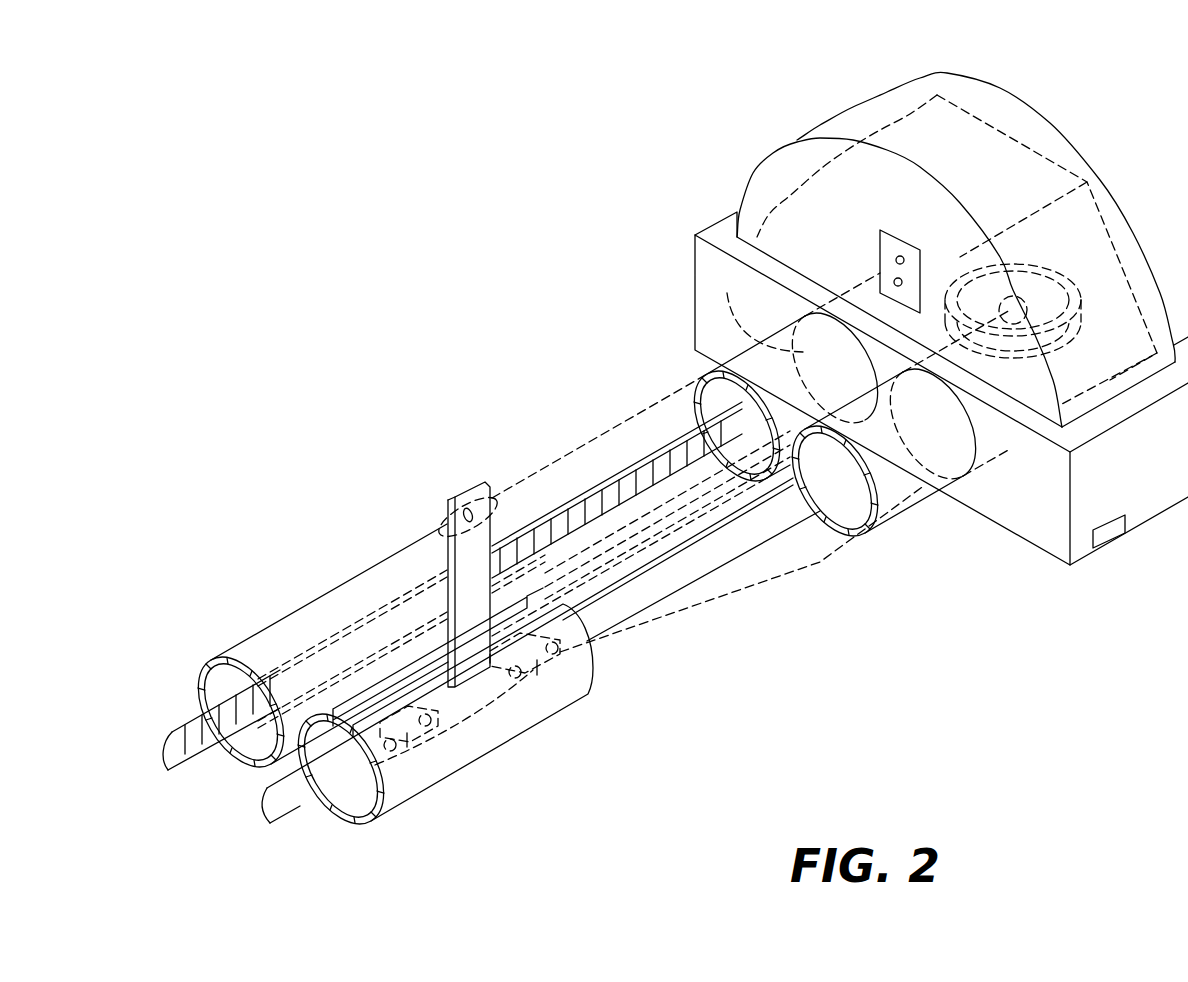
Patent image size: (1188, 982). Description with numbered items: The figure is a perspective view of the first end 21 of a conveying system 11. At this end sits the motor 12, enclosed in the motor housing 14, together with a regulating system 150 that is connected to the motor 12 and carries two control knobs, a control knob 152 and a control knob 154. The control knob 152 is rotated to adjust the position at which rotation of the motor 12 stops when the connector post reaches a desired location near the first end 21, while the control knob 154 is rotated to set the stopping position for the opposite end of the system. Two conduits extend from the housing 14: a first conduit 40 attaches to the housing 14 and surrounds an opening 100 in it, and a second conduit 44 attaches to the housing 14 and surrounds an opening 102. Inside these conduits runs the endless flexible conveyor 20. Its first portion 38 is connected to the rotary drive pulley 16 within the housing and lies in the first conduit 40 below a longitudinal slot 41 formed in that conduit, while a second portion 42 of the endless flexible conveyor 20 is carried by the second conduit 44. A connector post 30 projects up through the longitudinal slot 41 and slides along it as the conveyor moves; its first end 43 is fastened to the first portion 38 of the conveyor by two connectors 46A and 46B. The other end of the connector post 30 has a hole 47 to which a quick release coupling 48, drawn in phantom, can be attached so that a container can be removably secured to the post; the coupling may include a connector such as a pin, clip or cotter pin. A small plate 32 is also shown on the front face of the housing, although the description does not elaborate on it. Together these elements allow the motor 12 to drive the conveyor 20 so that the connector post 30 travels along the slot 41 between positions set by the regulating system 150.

The conveying system 11 is at (400, 112).
The motor 12 is at (1020, 165).
The motor housing 14 is at (850, 127).
The rotary drive pulley 16 is at (1048, 300).
The endless flexible conveyor 20 is at (660, 590).
The first end 21 is at (760, 105).
The connector post 30 is at (467, 552).
The switch plate 32 is at (1108, 535).
The first portion of the endless flexible conveyor 38 is at (762, 530).
The first conduit 40 is at (896, 500).
The longitudinal slot 41 is at (363, 710).
The second portion of the endless flexible conveyor 42 is at (577, 517).
The first end of the connector post 43 is at (488, 697).
The second conduit 44 is at (712, 398).
The connector 46A is at (408, 747).
The connector 46B is at (535, 670).
The hole 47 is at (472, 510).
The quick release coupling 48 is at (447, 500).
The opening 100 is at (952, 465).
The opening 102 is at (755, 309).
The regulating system 150 is at (891, 238).
The control knob 152 is at (896, 259).
The control knob 154 is at (894, 282).